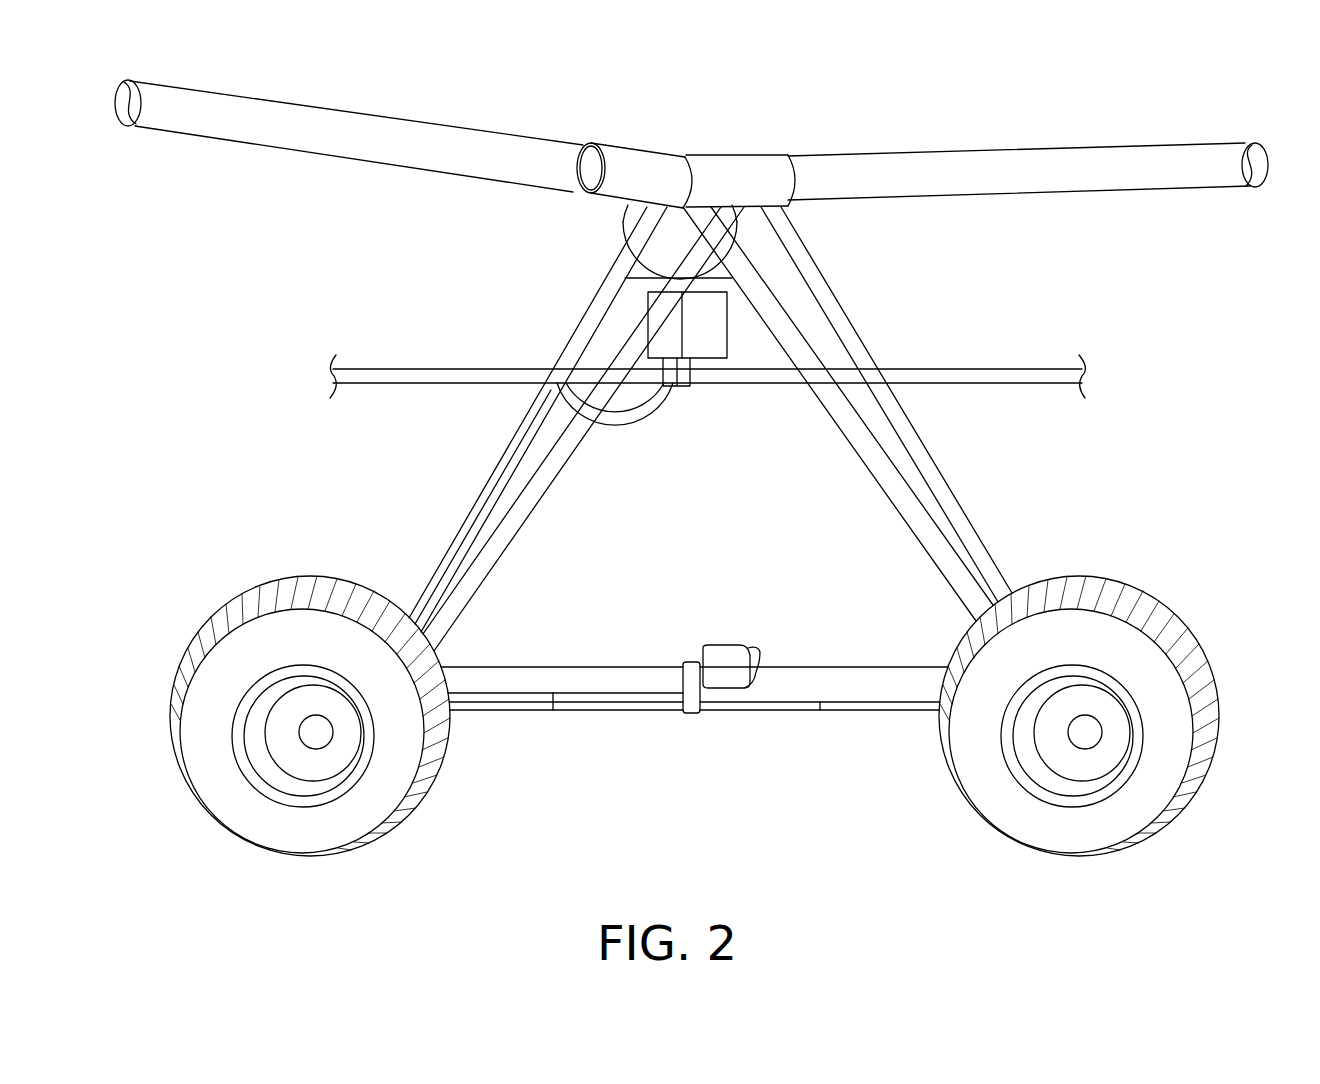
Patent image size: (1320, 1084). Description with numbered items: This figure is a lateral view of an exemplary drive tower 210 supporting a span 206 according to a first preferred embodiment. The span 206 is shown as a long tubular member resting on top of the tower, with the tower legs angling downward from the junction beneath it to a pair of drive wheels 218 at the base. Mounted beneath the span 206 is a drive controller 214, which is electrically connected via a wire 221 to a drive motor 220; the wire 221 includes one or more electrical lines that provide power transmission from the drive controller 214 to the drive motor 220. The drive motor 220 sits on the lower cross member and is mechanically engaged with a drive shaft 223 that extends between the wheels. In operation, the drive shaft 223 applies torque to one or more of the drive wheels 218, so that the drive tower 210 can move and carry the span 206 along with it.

The span 206 is at (242, 105).
The drive tower 210 is at (812, 109).
The drive controller 214 is at (708, 324).
The drive wheel 218 is at (1172, 718).
The drive motor 220 is at (733, 652).
The wire 221 is at (618, 430).
The drive shaft 223 is at (613, 712).